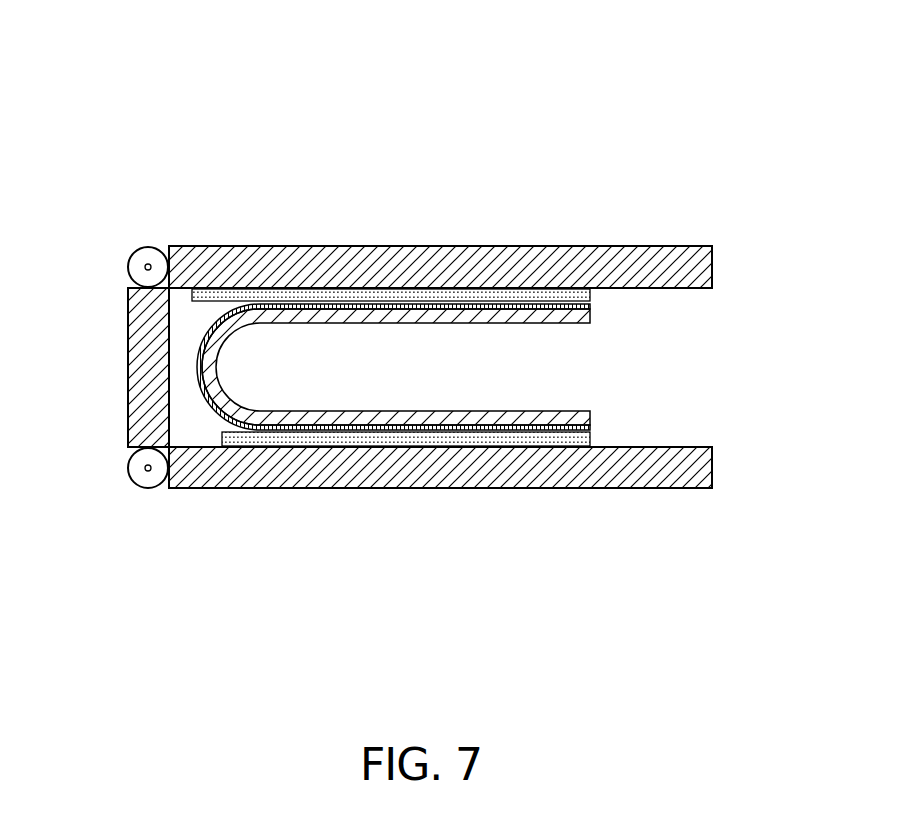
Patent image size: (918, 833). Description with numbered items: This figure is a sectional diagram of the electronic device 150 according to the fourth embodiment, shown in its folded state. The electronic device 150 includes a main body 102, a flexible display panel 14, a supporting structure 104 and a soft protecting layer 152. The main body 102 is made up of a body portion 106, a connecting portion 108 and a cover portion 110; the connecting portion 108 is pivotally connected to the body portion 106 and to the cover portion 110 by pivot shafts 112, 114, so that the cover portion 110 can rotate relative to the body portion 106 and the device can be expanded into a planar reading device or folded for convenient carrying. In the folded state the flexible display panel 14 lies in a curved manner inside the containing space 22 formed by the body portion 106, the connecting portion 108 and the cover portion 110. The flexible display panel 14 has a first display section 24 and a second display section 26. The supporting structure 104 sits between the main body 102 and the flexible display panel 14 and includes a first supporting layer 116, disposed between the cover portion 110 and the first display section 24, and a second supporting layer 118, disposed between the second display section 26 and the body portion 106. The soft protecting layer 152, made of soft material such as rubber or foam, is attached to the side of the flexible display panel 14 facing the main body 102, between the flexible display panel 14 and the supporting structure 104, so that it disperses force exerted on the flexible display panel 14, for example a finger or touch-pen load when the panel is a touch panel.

The electronic device 150 is at (708, 105).
The containing space 22 is at (682, 345).
The main body 102 is at (72, 280).
The body portion 106 is at (198, 459).
The connecting portion 108 is at (142, 367).
The cover portion 110 is at (193, 279).
The pivot shaft 112 is at (145, 483).
The pivot shaft 114 is at (145, 253).
The supporting structure 104 is at (378, 202).
The first supporting layer 116 is at (350, 300).
The second supporting layer 118 is at (298, 443).
The flexible display panel 14 is at (558, 202).
The first display section 24 is at (540, 318).
The second display section 26 is at (478, 420).
The soft protecting layer 152 is at (590, 305).